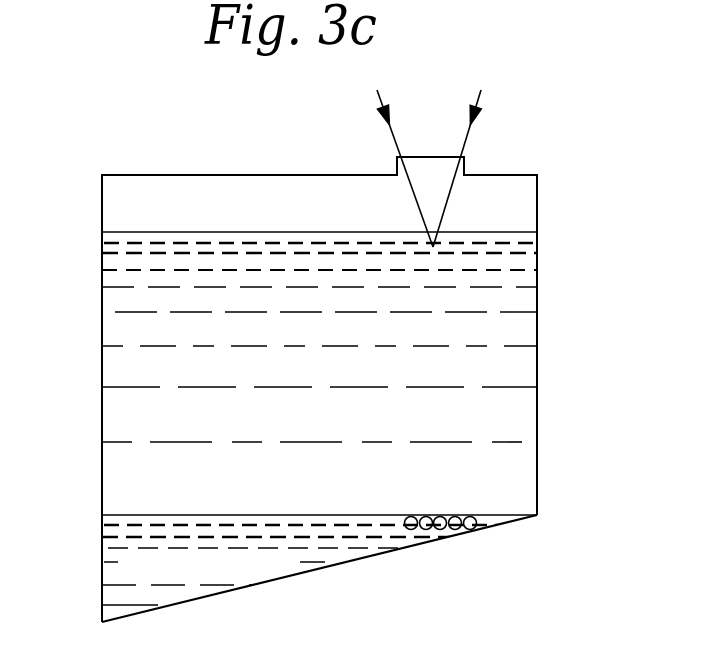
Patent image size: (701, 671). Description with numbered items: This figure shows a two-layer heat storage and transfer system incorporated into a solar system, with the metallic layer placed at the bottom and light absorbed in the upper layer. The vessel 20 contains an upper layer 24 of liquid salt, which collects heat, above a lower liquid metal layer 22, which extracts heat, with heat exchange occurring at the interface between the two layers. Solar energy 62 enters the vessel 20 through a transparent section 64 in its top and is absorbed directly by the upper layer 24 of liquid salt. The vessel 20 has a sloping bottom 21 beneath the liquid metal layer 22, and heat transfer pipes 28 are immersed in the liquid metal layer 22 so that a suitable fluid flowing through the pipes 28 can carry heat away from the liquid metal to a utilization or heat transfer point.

The vessel 20 is at (102, 597).
The sloping bottom 21 is at (262, 584).
The liquid metal layer 22 is at (102, 553).
The liquid salt layer 24 is at (530, 298).
The heat transfer pipes 28 is at (447, 538).
The solar energy 62 is at (472, 131).
The transparent section 64 is at (430, 155).